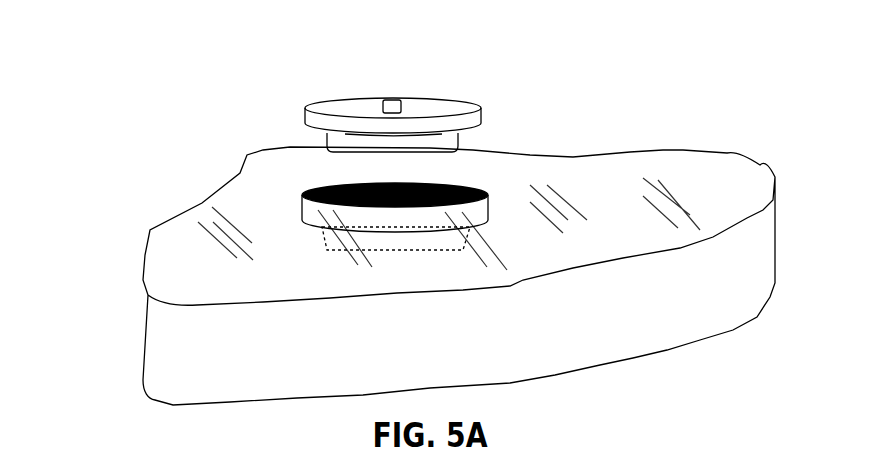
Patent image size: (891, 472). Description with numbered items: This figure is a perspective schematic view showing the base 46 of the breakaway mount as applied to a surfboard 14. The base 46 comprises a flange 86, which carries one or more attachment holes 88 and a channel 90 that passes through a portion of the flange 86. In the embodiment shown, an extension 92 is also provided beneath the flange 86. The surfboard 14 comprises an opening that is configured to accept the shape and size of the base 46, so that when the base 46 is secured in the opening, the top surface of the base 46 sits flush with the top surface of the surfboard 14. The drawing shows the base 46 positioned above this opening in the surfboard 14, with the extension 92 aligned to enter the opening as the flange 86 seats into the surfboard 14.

The surfboard 14 is at (202, 205).
The base 46 is at (374, 115).
The flange 86 is at (318, 122).
The attachment hole 88 is at (433, 102).
The channel 90 is at (398, 100).
The extension 92 is at (445, 140).